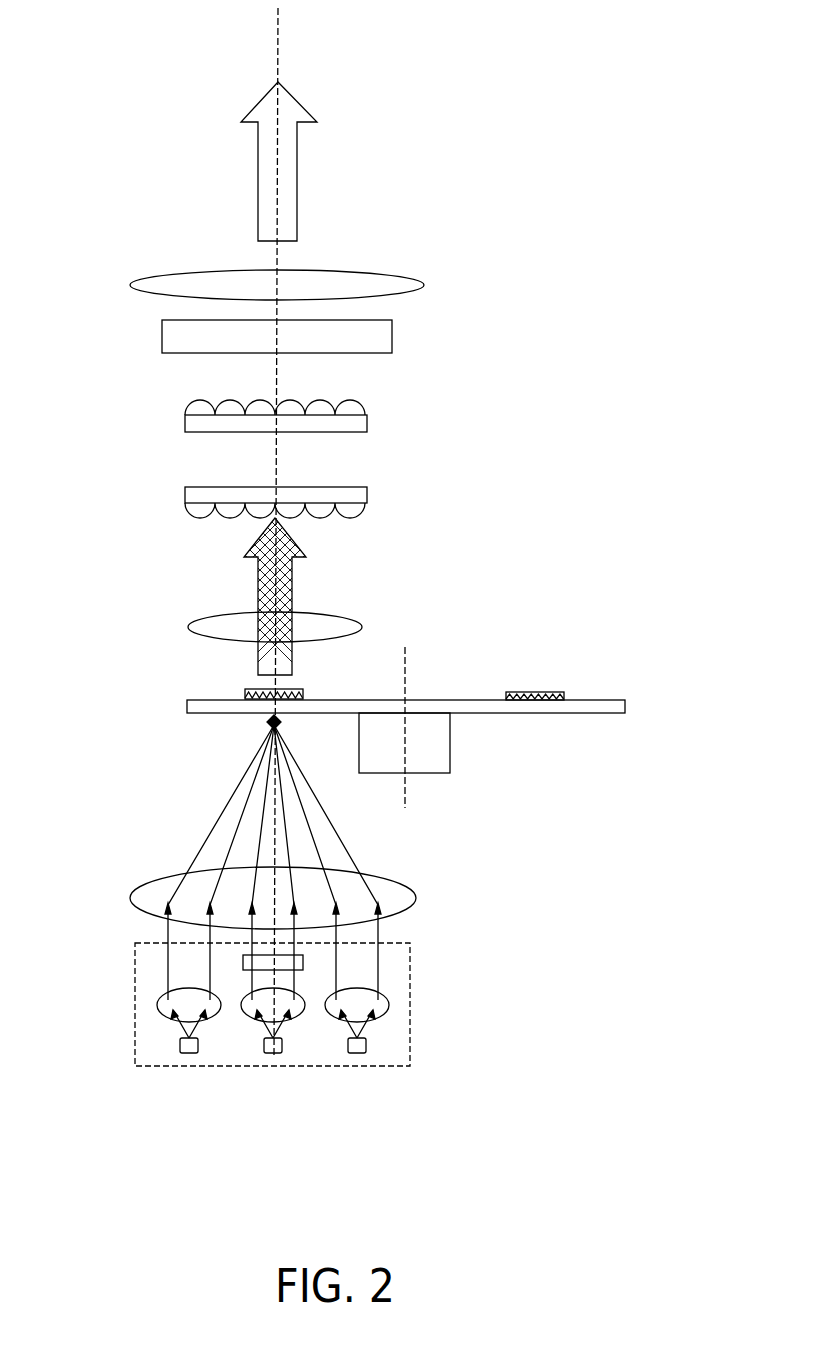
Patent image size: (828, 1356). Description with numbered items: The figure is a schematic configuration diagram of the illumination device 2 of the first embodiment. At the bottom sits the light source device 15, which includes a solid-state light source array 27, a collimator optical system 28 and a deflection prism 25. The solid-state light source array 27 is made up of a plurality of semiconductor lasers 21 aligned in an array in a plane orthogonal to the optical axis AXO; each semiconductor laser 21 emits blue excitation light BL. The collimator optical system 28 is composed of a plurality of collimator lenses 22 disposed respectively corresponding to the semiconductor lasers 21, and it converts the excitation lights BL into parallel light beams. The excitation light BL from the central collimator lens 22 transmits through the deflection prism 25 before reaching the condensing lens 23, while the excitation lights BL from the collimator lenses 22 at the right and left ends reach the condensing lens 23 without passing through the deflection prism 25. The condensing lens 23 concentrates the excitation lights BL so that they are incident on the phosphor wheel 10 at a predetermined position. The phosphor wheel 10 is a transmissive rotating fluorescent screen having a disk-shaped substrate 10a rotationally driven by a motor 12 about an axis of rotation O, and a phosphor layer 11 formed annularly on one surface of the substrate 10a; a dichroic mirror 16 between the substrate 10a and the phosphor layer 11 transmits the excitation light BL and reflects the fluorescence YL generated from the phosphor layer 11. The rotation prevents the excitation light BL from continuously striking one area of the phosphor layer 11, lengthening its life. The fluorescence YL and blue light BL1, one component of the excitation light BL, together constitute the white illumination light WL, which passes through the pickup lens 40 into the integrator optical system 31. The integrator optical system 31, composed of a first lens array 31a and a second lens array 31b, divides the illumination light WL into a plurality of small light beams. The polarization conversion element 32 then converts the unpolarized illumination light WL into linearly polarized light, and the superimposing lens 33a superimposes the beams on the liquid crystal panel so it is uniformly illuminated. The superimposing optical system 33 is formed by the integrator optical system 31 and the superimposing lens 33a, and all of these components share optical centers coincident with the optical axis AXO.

The illumination device 2 is at (652, 118).
The phosphor wheel 10 is at (172, 710).
The substrate 10a is at (593, 718).
The phosphor layer 11 is at (298, 688).
The motor 12 is at (442, 765).
The light source device 15 is at (320, 1068).
The dichroic mirror 16 is at (305, 698).
The semiconductor laser 21 is at (193, 1055).
The collimator lens 22 is at (385, 1008).
The condensing lens 23 is at (407, 895).
The deflection prism 25 is at (247, 957).
The solid-state light source array 27 is at (268, 1056).
The collimator optical system 28 is at (417, 962).
The integrator optical system 31 is at (201, 458).
The first lens array 31a is at (227, 500).
The second lens array 31b is at (185, 423).
The polarization conversion element 32 is at (385, 340).
The superimposing optical system 33 is at (288, 229).
The superimposing lens 33a is at (408, 283).
The pickup lens 40 is at (188, 627).
The optical axis AXO is at (280, 37).
The illumination light WL is at (292, 157).
The excitation light BL is at (218, 810).
The blue light BL1 is at (283, 584).
The fluorescence YL is at (288, 600).
The axis of rotation O is at (406, 660).